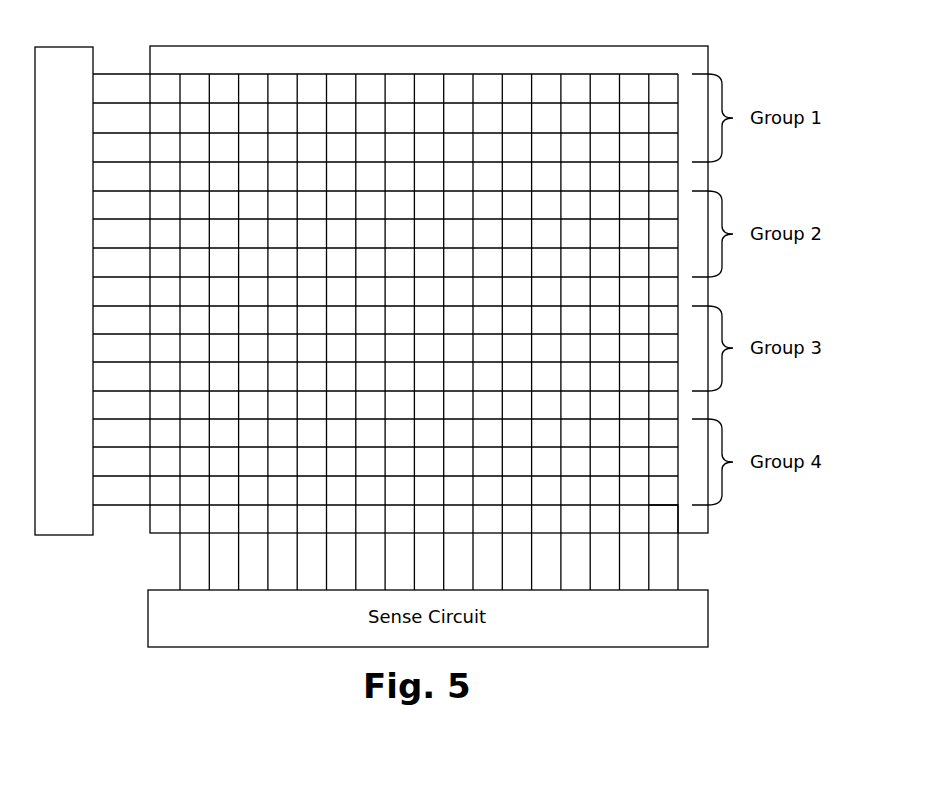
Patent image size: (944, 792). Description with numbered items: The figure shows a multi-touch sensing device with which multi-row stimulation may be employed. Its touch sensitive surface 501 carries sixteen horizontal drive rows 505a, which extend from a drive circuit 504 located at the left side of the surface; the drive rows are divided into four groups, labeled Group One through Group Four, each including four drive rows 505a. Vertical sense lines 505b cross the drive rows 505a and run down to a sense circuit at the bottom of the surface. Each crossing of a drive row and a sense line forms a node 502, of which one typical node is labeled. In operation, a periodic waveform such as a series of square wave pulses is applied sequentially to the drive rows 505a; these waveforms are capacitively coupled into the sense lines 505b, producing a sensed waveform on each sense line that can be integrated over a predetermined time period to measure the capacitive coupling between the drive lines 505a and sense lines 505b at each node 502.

The touch sensitive surface 501 is at (400, 45).
The node 502 is at (677, 505).
The drive circuit 504 is at (80, 47).
The drive rows 505a is at (137, 507).
The sense lines 505b is at (178, 548).